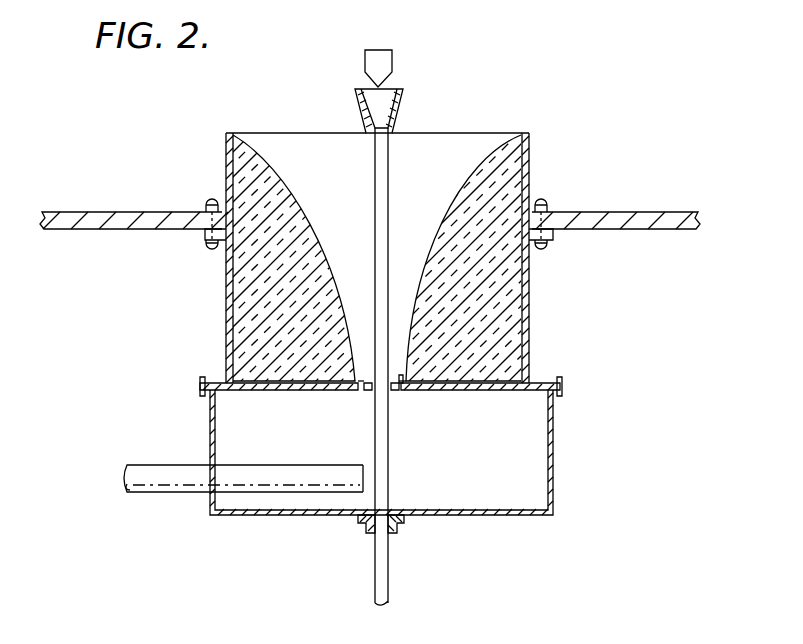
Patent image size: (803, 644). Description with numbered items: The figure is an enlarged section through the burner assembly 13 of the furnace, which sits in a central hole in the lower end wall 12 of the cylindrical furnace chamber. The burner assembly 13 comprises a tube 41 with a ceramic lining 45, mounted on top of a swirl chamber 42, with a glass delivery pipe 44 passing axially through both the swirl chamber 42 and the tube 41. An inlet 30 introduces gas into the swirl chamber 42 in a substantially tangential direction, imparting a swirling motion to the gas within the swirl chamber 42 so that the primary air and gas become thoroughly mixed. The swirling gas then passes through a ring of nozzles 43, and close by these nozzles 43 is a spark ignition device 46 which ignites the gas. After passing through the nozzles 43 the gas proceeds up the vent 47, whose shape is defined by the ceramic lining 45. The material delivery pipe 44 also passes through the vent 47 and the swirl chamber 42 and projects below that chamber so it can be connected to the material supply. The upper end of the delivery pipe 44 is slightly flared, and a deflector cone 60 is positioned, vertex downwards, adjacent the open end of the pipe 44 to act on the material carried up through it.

The lower end wall 12 is at (611, 212).
The burner assembly 13 is at (590, 399).
The inlet 30 is at (142, 466).
The tube 41 is at (228, 305).
The swirl chamber 42 is at (551, 474).
The nozzles 43 is at (362, 393).
The glass delivery pipe 44 is at (375, 572).
The ceramic lining 45 is at (506, 321).
The spark ignition device 46 is at (398, 392).
The vent 47 is at (316, 140).
The deflector cone 60 is at (378, 52).